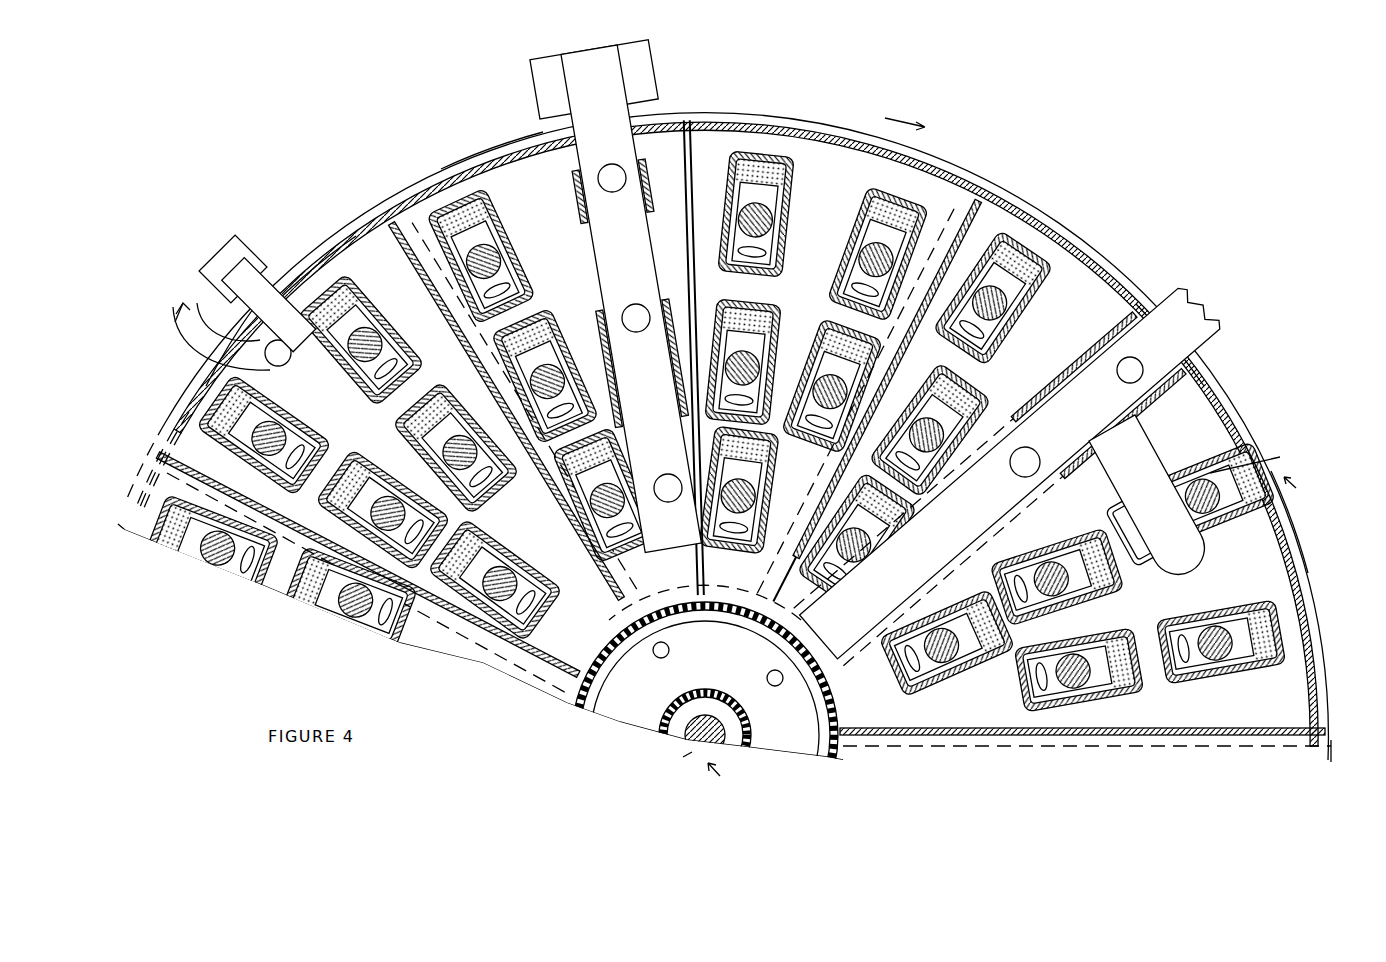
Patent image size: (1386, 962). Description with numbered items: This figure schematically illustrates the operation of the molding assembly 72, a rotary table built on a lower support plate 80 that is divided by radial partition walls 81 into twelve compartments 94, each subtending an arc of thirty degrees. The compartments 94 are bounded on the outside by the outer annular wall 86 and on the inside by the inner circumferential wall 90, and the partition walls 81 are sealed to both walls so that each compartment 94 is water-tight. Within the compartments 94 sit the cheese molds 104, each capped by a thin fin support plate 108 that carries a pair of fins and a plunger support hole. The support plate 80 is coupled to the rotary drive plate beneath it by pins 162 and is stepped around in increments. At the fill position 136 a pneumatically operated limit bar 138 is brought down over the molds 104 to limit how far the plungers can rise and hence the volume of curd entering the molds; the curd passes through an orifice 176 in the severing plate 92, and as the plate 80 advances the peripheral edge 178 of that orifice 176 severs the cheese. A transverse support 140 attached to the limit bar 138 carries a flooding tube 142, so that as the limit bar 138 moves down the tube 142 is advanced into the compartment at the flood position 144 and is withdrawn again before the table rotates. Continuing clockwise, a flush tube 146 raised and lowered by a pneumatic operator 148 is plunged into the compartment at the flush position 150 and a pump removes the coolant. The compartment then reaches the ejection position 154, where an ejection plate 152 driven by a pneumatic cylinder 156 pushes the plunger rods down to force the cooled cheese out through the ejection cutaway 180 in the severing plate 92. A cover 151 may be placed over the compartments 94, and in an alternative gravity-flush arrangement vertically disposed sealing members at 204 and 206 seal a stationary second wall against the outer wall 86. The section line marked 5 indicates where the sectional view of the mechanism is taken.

The molding assembly 72 is at (851, 107).
The lower support plate 80 is at (376, 449).
The partition walls 81 is at (688, 260).
The outer annular wall 86 is at (717, 130).
The inner circumferential wall 90 is at (585, 655).
The severing plate 92 is at (1090, 242).
The compartments 94 is at (689, 130).
The molds 104 is at (522, 556).
The fin support plate 108 is at (477, 231).
The fill position 136 is at (1054, 210).
The limit bar 138 is at (1020, 420).
The transverse support 140 is at (1142, 452).
The flooding tube 142 is at (1192, 558).
The flood position 144 is at (1299, 508).
The flush tube 146 is at (292, 364).
The pneumatic operator 148 is at (224, 230).
The flush position 150 is at (317, 231).
The cover 151 is at (1335, 745).
The ejection plate 152 is at (596, 306).
The ejection position 154 is at (497, 145).
The pneumatic cylinder 156 is at (540, 55).
The pins 162 is at (661, 660).
The orifice 176 is at (1068, 358).
The peripheral edge 178 is at (1088, 462).
The ejection cutaway 180 is at (949, 260).
The sealing member 204 is at (166, 410).
The sealing member 206 is at (375, 208).
The section line 5- 5 is at (991, 617).